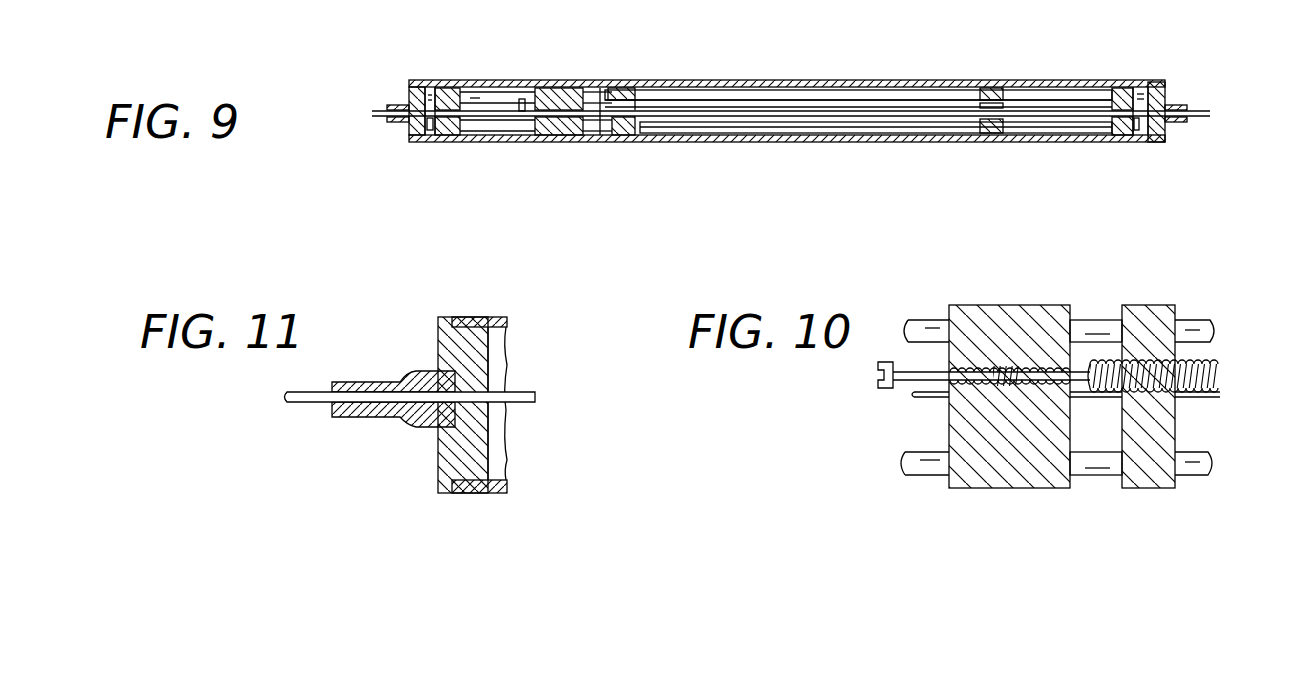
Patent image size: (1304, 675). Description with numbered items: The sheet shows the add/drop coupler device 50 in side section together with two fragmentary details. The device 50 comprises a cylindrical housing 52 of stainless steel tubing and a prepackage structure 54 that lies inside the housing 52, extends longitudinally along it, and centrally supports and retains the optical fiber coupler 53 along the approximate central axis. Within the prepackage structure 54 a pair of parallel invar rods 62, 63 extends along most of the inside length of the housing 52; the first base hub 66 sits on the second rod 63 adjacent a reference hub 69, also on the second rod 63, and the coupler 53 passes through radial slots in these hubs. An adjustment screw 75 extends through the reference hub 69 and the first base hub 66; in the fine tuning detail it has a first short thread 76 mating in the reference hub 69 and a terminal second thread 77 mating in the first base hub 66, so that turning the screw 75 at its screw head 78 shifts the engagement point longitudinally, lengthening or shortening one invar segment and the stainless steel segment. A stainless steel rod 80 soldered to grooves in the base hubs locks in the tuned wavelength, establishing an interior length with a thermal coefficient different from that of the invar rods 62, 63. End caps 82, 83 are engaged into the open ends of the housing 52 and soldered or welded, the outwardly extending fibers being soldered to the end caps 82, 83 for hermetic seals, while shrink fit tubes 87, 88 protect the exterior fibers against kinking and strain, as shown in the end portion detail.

In FIG. 9, the add/drop coupler device 50 is at (905, 78).
In FIG. 9, the cylindrical housing 52 is at (577, 82).
In FIG. 11, the cylindrical housing 52 is at (498, 317).
In FIG. 9, the optical fiber coupler 53 is at (487, 105).
In FIG. 11, the optical fiber coupler 53 is at (522, 392).
In FIG. 10, the optical fiber coupler 53 is at (928, 398).
In FIG. 9, the prepackage structure 54 is at (1010, 102).
In FIG. 10, the first invar rod 62 is at (917, 320).
In FIG. 9, the second invar rod 63 is at (808, 130).
In FIG. 10, the second invar rod 63 is at (930, 476).
In FIG. 9, the first base hub 66 is at (626, 128).
In FIG. 10, the first base hub 66 is at (1153, 488).
In FIG. 9, the reference hub 69 is at (575, 135).
In FIG. 10, the reference hub 69 is at (1010, 488).
In FIG. 9, the adjustment screw 75 is at (523, 99).
In FIG. 10, the adjustment screw 75 is at (900, 370).
In FIG. 10, the first short thread 76 is at (1010, 366).
In FIG. 10, the terminal second thread 77 is at (1140, 364).
In FIG. 10, the screw head 78 is at (877, 380).
In FIG. 9, the stainless steel rod 80 is at (797, 92).
In FIG. 11, the end cap 82 is at (437, 342).
In FIG. 9, the end cap 83 is at (1168, 84).
In FIG. 9, the shrink fit tube 87 is at (392, 104).
In FIG. 11, the shrink fit tube 87 is at (352, 381).
In FIG. 9, the shrink fit tube 88 is at (1180, 124).